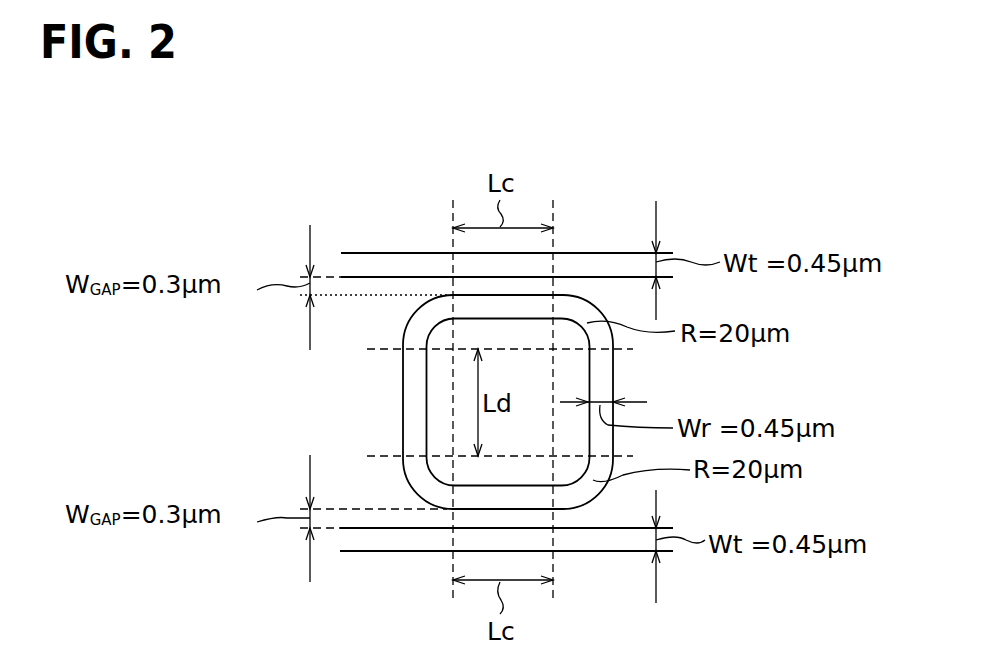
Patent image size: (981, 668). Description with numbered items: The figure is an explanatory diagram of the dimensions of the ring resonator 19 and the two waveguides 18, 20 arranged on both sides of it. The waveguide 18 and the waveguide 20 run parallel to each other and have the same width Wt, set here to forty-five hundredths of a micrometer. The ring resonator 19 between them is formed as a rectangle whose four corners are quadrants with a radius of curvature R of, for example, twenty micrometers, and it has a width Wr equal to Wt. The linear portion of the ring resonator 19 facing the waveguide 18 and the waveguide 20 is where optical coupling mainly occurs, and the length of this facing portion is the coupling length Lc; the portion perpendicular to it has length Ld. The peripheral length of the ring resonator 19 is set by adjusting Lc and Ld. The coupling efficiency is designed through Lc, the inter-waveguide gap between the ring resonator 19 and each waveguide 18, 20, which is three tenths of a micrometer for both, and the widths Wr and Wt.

The waveguide 18 is at (612, 553).
The ring resonator 19 is at (613, 377).
The waveguide 20 is at (612, 252).